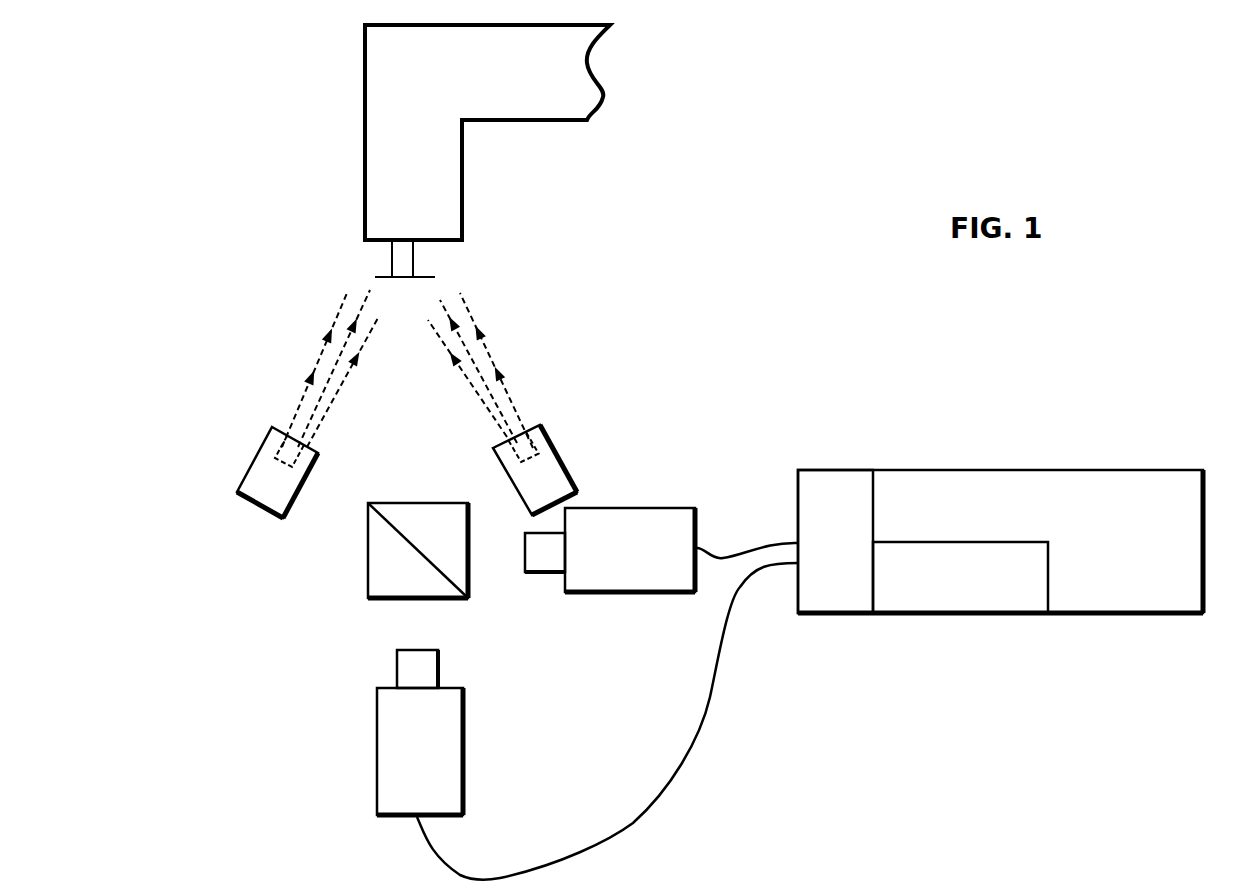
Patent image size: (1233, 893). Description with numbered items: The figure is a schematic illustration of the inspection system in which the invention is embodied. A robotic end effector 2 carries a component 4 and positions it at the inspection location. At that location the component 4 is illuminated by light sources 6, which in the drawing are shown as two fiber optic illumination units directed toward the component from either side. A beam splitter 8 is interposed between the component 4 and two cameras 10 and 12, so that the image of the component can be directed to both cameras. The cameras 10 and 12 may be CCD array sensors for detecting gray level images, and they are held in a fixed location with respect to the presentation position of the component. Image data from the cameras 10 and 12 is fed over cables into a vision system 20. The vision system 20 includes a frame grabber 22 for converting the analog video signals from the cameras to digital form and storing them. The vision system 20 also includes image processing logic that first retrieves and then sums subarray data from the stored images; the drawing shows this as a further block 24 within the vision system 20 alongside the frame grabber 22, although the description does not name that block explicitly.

The robotic end effector 2 is at (445, 185).
The component 4 is at (420, 280).
The light sources 6 is at (252, 517).
The beam splitter 8 is at (370, 503).
The camera 10 is at (400, 735).
The camera 12 is at (645, 517).
The vision system 20 is at (1140, 449).
The frame grabber 22 is at (825, 482).
The memory / computation unit 24 is at (992, 600).